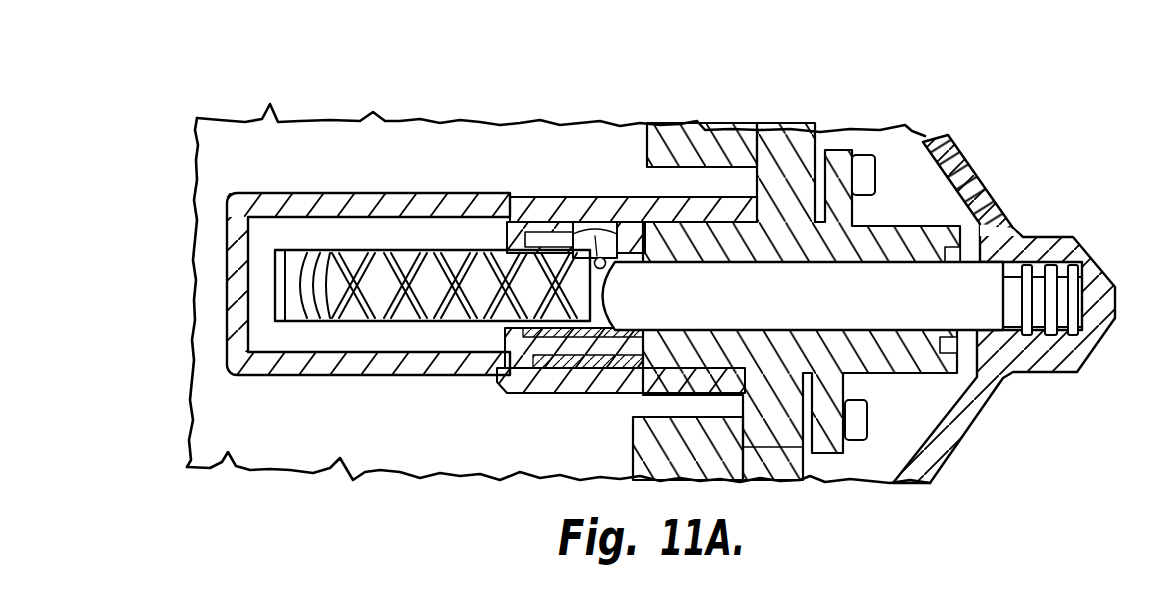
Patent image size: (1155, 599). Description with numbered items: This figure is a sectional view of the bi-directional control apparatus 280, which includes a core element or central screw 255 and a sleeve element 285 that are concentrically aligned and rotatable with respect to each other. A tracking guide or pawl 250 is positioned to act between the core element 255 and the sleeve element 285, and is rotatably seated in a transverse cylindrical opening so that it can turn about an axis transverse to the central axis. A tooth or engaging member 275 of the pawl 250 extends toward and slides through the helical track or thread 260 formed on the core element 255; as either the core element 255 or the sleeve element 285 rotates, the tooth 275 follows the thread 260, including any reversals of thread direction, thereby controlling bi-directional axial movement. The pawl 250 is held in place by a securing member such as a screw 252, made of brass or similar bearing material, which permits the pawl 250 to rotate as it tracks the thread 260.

The bi-directional control apparatus 280 is at (360, 97).
The sleeve element 285 is at (428, 215).
The screw 252 is at (590, 212).
The tracking guide 250 is at (613, 222).
The tooth 275 is at (605, 267).
The core element 255 is at (955, 290).
The thread 260 is at (432, 325).